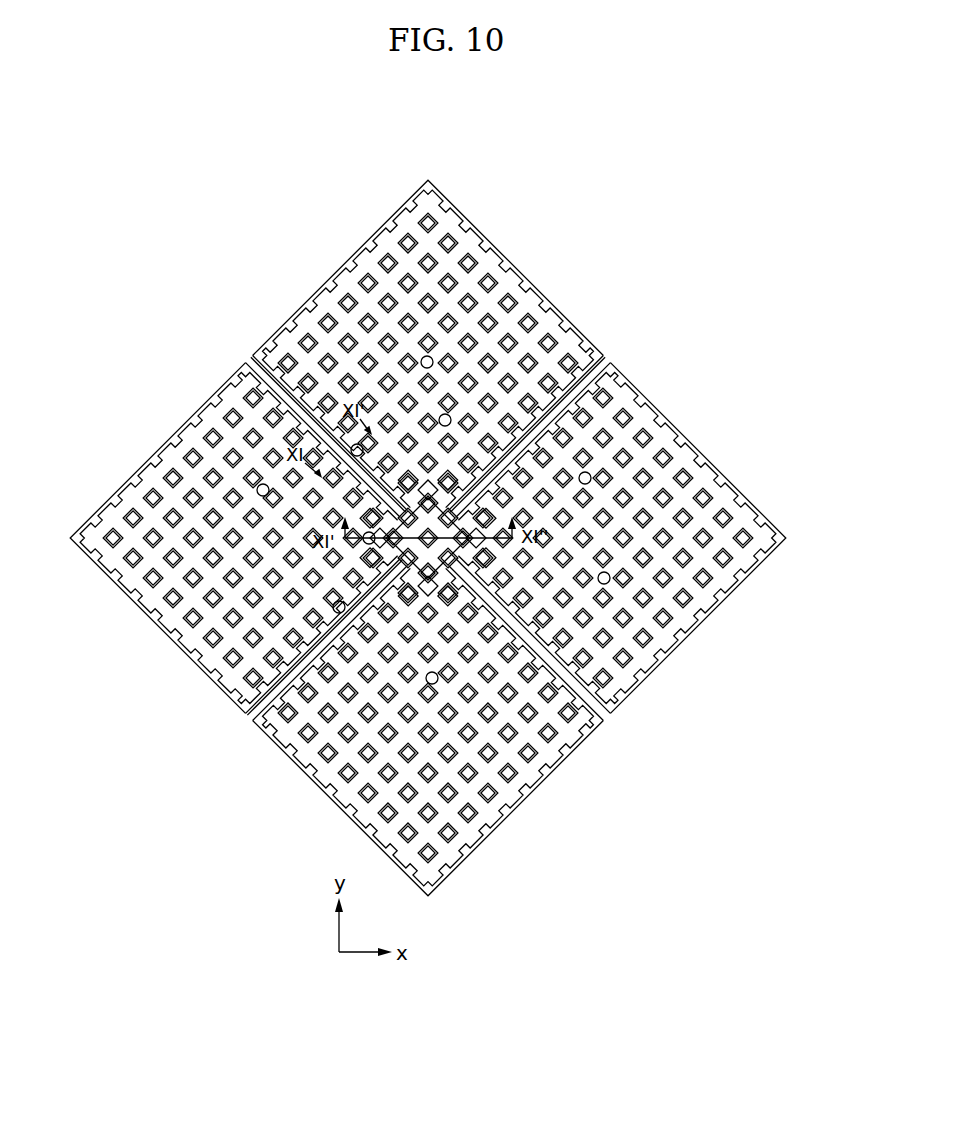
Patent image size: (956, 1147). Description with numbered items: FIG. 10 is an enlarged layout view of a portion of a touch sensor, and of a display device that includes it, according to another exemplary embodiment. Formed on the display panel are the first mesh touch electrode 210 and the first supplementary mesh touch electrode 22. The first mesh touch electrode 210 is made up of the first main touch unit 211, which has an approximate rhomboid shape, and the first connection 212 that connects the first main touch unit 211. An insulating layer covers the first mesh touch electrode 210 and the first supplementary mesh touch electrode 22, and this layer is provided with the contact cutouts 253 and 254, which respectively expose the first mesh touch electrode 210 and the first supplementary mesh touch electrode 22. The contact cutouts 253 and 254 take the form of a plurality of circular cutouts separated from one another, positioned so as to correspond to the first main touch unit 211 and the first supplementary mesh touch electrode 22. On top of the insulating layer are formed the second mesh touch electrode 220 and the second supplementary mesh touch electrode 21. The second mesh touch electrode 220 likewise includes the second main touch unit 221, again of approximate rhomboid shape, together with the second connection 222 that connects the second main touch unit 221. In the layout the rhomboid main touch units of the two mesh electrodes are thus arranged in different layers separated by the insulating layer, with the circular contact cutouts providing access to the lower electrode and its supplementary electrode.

The second supplementary mesh touch electrode 21 is at (610, 526).
The first supplementary mesh touch electrode 22 is at (428, 355).
The first mesh touch electrode 210 is at (336, 629).
The first main touch unit 211 is at (192, 662).
The first connection 212 is at (355, 662).
The second mesh touch electrode 220 is at (519, 446).
The second main touch unit 221 is at (488, 240).
The second connection 222 is at (523, 457).
The contact cutout 253 is at (335, 606).
The contact cutout 254 is at (262, 356).